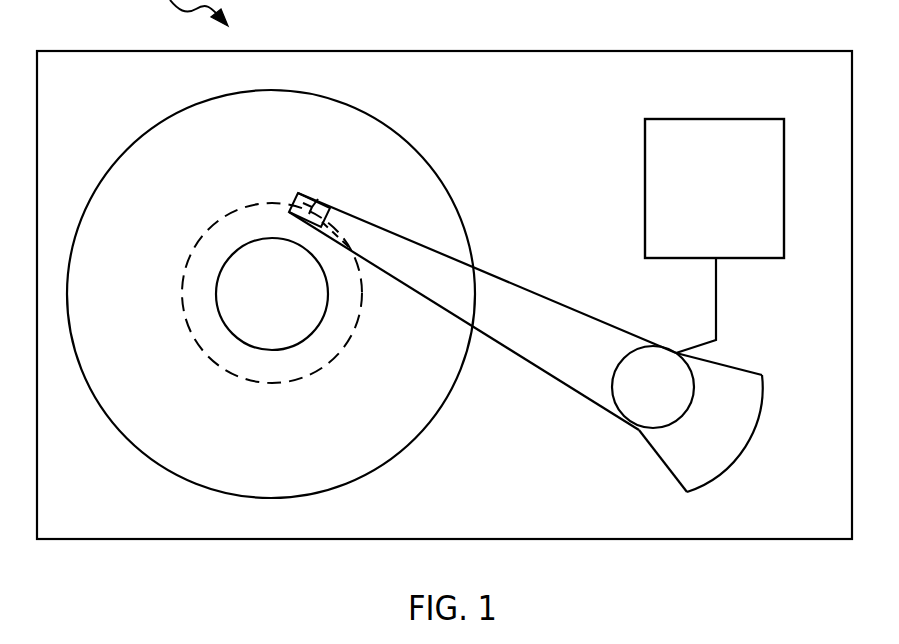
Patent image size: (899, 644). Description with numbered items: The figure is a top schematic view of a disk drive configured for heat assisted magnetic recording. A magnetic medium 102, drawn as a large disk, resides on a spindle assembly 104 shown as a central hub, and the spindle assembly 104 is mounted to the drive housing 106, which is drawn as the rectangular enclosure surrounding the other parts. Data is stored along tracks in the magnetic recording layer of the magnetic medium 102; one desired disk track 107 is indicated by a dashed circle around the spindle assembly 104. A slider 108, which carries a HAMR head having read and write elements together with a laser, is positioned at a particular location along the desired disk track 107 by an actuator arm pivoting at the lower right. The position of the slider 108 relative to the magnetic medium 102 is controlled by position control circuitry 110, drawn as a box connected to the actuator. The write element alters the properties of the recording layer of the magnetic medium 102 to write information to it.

The magnetic medium 102 is at (397, 127).
The spindle assembly 104 is at (290, 299).
The drive housing 106 is at (579, 50).
The disk track 107 is at (248, 208).
The slider 108 is at (320, 205).
The position control circuitry 110 is at (727, 203).